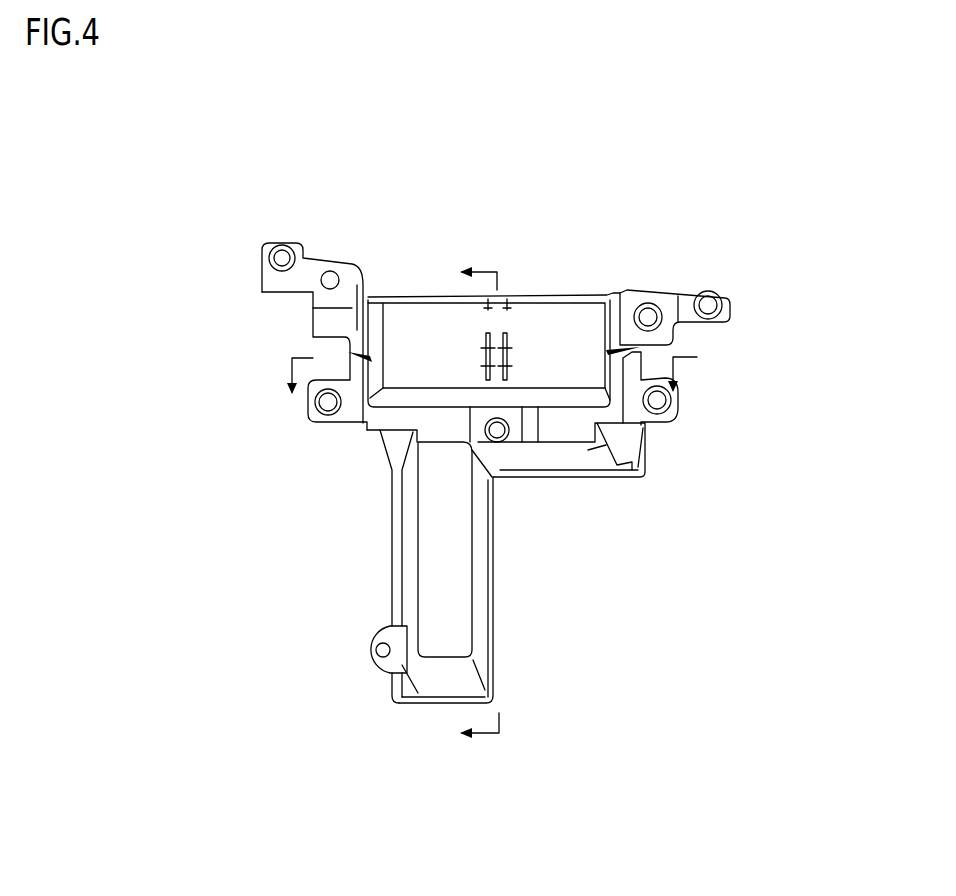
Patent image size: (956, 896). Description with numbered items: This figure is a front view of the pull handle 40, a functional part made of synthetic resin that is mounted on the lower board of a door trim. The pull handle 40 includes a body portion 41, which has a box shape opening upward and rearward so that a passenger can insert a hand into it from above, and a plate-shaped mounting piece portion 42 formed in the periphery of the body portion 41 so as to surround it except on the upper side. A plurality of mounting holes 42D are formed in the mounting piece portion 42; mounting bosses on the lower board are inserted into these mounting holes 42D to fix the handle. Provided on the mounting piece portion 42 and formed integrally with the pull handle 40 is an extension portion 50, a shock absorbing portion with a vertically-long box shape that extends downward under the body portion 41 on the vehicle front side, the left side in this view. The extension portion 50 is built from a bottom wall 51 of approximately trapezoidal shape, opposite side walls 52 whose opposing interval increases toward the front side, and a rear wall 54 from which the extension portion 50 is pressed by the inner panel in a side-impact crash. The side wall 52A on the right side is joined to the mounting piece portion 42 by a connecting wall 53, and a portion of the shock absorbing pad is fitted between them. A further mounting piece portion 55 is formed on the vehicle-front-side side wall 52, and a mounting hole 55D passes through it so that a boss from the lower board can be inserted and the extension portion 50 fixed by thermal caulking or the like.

The pull handle 40 is at (359, 236).
The body portion 41 is at (560, 328).
The mounting piece portion 42 is at (640, 297).
The mounting holes 42D is at (320, 283).
The extension portion 50 is at (507, 597).
The bottom wall 51 is at (425, 683).
The opposite side walls 52 is at (405, 567).
The side wall 52A is at (480, 598).
The connecting wall 53 is at (587, 458).
The rear wall 54 is at (447, 513).
The mounting piece portion 55 is at (380, 672).
The mounting hole 55D is at (383, 651).